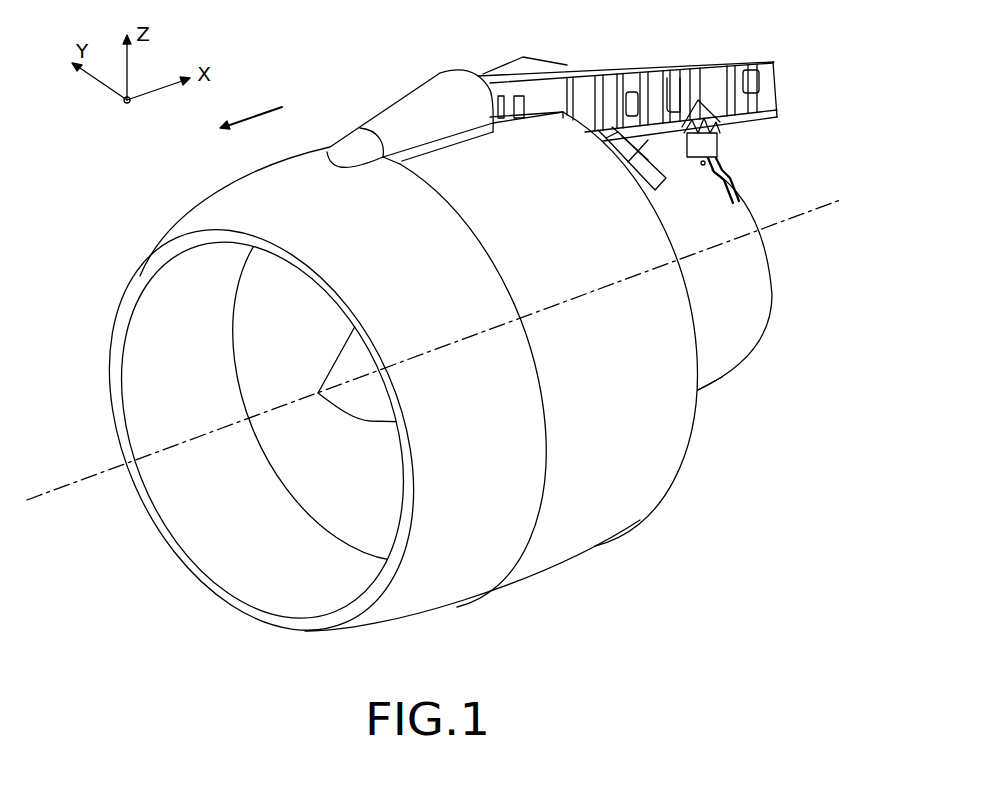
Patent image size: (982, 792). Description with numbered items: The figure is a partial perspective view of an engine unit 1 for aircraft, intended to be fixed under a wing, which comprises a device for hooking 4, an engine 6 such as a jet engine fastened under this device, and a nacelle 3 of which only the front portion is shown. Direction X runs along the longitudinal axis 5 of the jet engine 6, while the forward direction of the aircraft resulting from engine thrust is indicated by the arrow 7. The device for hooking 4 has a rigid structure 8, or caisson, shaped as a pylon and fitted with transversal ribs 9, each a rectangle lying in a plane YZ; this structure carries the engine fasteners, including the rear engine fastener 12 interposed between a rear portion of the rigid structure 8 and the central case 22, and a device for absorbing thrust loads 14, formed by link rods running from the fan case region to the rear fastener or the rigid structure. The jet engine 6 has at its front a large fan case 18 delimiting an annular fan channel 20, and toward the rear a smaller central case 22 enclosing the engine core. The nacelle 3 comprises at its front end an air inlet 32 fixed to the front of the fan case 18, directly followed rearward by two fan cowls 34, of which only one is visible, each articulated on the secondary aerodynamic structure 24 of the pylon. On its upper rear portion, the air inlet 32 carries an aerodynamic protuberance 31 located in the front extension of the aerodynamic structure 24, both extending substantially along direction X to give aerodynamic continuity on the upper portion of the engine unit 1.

The engine unit 1 is at (805, 40).
The nacelle 3 is at (425, 395).
The device for hooking 4 is at (658, 83).
The longitudinal axis 5 is at (90, 477).
The engine 6 is at (736, 371).
The arrow 7 is at (262, 108).
The rigid structure 8 is at (779, 110).
The transversal ribs 9 is at (678, 66).
The rear engine fastener 12 is at (719, 160).
The device for absorbing thrust loads 14 is at (659, 182).
The fan case 18 is at (234, 319).
The annular fan channel 20 is at (257, 377).
The central case 22 is at (750, 287).
The secondary aerodynamic structure 24 is at (393, 91).
The aerodynamic protuberance 31 is at (333, 163).
The air inlet 32 is at (432, 593).
The fan cowls 34 is at (563, 543).